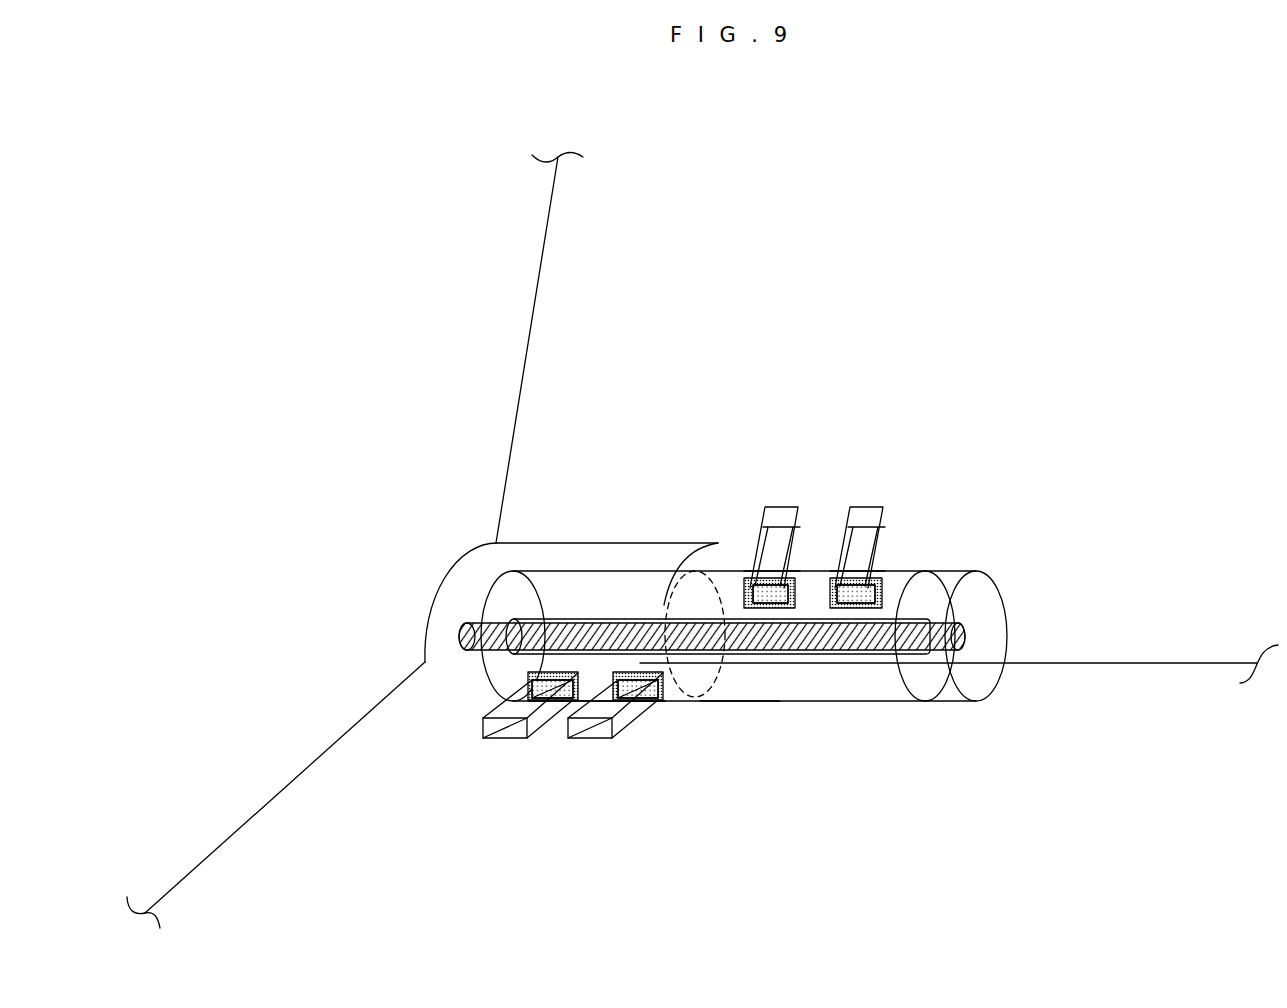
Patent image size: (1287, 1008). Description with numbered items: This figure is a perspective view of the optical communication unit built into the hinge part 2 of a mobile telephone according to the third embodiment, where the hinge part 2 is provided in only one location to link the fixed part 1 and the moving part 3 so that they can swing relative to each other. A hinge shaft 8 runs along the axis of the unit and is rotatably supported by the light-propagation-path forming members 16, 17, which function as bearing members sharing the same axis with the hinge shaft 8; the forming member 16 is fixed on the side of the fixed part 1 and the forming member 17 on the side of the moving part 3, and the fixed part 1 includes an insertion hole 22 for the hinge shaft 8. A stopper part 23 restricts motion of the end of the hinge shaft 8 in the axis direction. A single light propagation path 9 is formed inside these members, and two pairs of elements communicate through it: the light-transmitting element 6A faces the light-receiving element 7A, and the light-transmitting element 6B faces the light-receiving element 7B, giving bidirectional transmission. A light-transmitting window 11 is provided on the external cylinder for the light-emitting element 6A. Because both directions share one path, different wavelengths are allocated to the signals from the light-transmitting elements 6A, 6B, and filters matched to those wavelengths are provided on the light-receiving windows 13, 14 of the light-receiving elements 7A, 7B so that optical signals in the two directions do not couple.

The fixed part 1 is at (263, 833).
The hinge part 2 is at (455, 507).
The moving part 3 is at (565, 278).
The light-transmitting element 6A is at (585, 740).
The light-transmitting element 6B is at (863, 533).
The light-receiving element 7A is at (778, 533).
The light-receiving element 7B is at (500, 738).
The hinge shaft 8 is at (867, 630).
The light propagation path 9 is at (810, 682).
The light-transmitting window 11 is at (878, 570).
The light-receiving window 13 is at (757, 571).
The light-receiving window 14 is at (528, 678).
The light-propagation-path forming member 16 is at (594, 593).
The light-propagation-path forming member 17 is at (740, 682).
The insertion hole 22 is at (465, 622).
The stopper part 23 is at (982, 592).